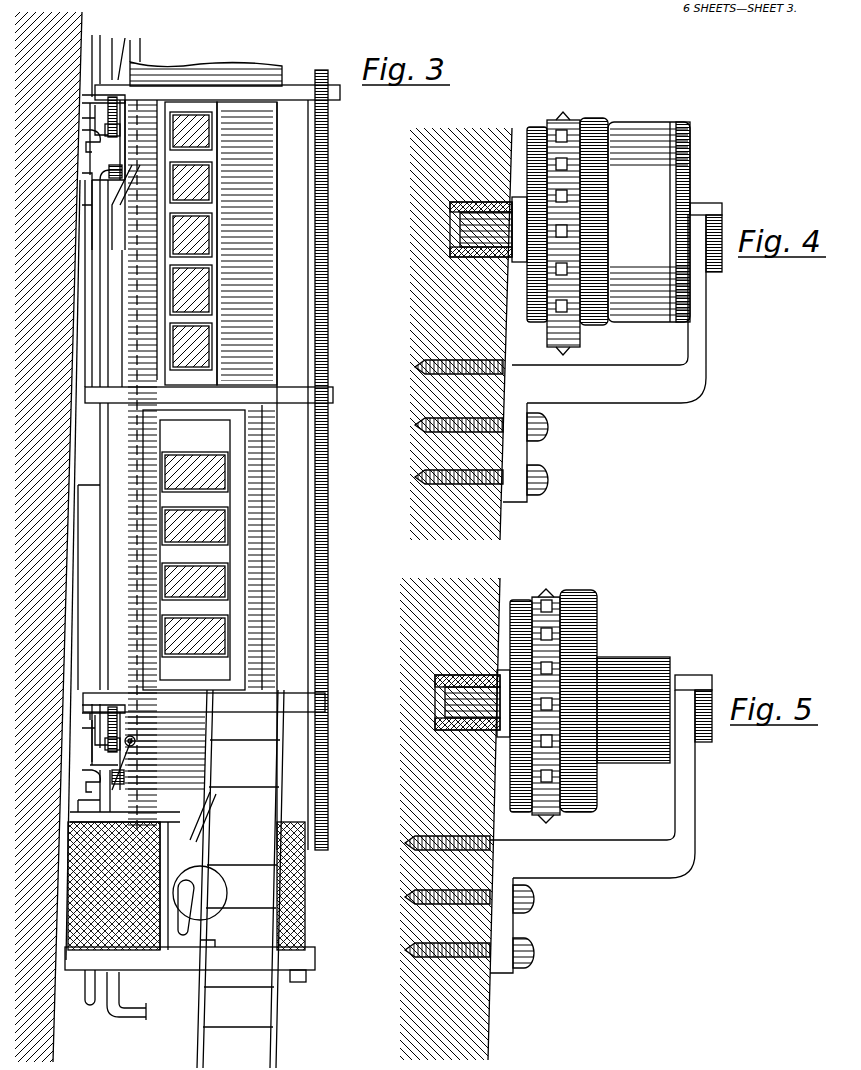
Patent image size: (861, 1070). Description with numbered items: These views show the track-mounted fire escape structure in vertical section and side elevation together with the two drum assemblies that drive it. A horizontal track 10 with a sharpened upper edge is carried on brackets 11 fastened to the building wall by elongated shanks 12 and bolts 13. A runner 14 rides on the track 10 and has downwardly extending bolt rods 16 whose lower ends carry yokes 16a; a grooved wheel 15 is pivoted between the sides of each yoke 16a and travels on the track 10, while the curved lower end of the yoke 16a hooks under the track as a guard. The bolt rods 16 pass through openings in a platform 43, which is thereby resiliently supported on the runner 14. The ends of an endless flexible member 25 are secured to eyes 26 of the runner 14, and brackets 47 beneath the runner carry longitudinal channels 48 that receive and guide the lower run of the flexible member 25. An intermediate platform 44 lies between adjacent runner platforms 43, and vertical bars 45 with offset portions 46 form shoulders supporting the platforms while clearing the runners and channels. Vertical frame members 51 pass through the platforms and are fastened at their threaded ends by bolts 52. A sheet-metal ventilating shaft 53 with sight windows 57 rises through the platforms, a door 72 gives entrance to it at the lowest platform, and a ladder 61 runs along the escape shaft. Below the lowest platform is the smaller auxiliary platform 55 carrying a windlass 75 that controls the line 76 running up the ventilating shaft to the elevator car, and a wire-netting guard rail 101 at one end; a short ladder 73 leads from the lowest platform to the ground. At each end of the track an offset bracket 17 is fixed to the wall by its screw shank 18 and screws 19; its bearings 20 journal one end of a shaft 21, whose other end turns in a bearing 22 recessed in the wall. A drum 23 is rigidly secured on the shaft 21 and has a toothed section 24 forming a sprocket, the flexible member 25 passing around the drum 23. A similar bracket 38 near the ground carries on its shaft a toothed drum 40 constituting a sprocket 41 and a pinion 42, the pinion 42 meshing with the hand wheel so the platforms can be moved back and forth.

In FIG. 3, the horizontal track 10 is at (118, 150).
In FIG. 3, the bracket 11 is at (106, 122).
In FIG. 3, the elongated shank 12 is at (82, 124).
In FIG. 3, the bolt 13 is at (82, 141).
In FIG. 3, the runner 14 is at (113, 122).
In FIG. 3, the grooved wheel 15 is at (100, 52).
In FIG. 3, the bolt rod 16 is at (120, 126).
In FIG. 3, the yoke 16a is at (150, 107).
In FIG. 4, the offset bracket 17 is at (662, 392).
In FIG. 4, the screw shank 18 is at (505, 372).
In FIG. 5, the screw shank 18 is at (490, 841).
In FIG. 4, the screw 19 is at (548, 428).
In FIG. 5, the screw 19 is at (536, 910).
In FIG. 4, the bearing 20 is at (715, 210).
In FIG. 5, the bearing 20 is at (690, 675).
In FIG. 4, the shaft 21 is at (678, 227).
In FIG. 5, the shaft 21 is at (474, 712).
In FIG. 4, the bearing 22 is at (478, 200).
In FIG. 5, the bearing 22 is at (467, 702).
In FIG. 4, the drum 23 is at (632, 148).
In FIG. 4, the sprocket section 24 is at (568, 140).
In FIG. 3, the endless flexible member 25 is at (128, 174).
In FIG. 3, the eye 26 is at (82, 100).
In FIG. 5, the bracket 38 is at (640, 856).
In FIG. 5, the drum 40 is at (575, 637).
In FIG. 5, the sprocket 41 is at (556, 605).
In FIG. 5, the pinion 42 is at (642, 665).
In FIG. 3, the platform 43 is at (297, 88).
In FIG. 3, the intermediate platform 44 is at (335, 396).
In FIG. 3, the vertical bar 45 is at (85, 266).
In FIG. 3, the offset portion 46 is at (122, 441).
In FIG. 3, the bracket 47 is at (80, 190).
In FIG. 3, the longitudinal channel 48 is at (109, 171).
In FIG. 3, the vertical frame member 51 is at (316, 506).
In FIG. 3, the bolt 52 is at (299, 984).
In FIG. 3, the ventilating shaft 53 is at (262, 227).
In FIG. 3, the auxiliary platform 55 is at (317, 961).
In FIG. 3, the window 57 is at (193, 237).
In FIG. 3, the ladder 61 is at (122, 808).
In FIG. 3, the door 72 is at (228, 510).
In FIG. 3, the short ladder 73 is at (276, 1022).
In FIG. 3, the windlass 75 is at (217, 889).
In FIG. 3, the line 76 is at (198, 845).
In FIG. 3, the guard rail 101 is at (178, 880).